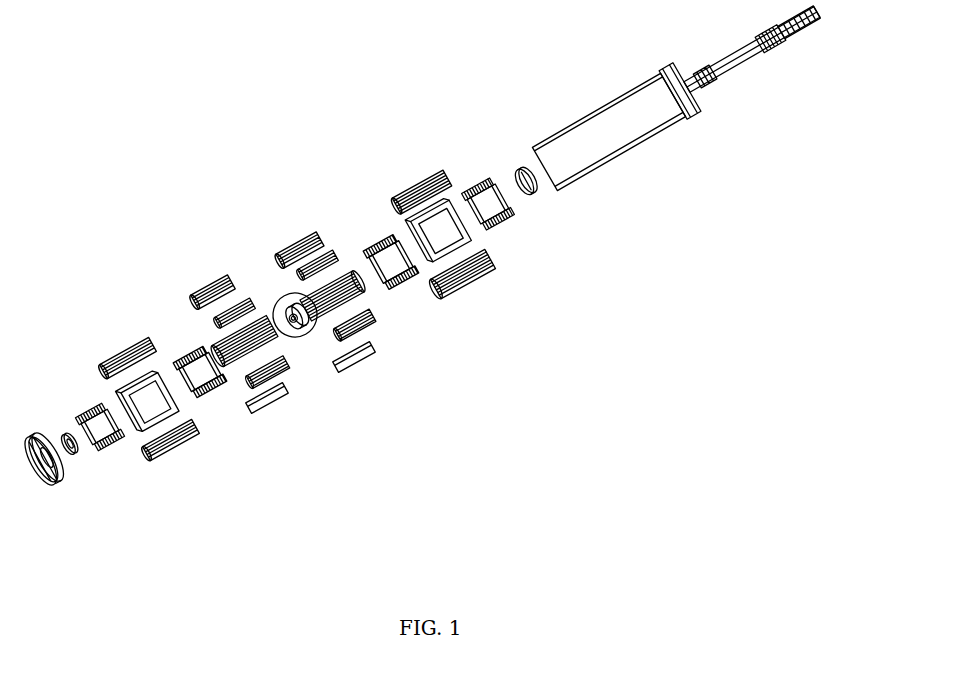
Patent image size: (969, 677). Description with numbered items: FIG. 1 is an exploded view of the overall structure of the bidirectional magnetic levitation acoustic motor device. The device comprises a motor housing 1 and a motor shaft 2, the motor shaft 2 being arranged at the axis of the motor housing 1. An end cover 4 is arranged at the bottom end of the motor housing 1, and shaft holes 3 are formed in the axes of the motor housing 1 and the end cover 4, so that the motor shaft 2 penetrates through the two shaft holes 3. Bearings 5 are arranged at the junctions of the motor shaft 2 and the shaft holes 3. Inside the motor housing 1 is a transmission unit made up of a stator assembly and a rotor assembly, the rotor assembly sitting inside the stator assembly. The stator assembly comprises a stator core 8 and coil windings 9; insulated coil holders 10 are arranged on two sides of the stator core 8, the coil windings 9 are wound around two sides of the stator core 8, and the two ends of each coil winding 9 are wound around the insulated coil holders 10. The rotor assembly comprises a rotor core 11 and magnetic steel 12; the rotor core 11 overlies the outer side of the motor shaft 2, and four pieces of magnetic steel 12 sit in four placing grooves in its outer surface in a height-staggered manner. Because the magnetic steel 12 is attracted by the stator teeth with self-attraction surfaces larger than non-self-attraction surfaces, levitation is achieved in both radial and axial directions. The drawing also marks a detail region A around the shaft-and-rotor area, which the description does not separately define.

The motor housing 1 is at (677, 130).
The motor shaft 2 is at (705, 88).
The shaft holes 3 is at (53, 447).
The end cover 4 is at (63, 483).
The bearings 5 is at (537, 193).
The stator core 8 is at (478, 270).
The coil windings 9 is at (450, 287).
The insulated coil holders 10 is at (502, 230).
The rotor core 11 is at (252, 327).
The magnetic steel 12 is at (327, 253).
The detail region A is at (305, 340).